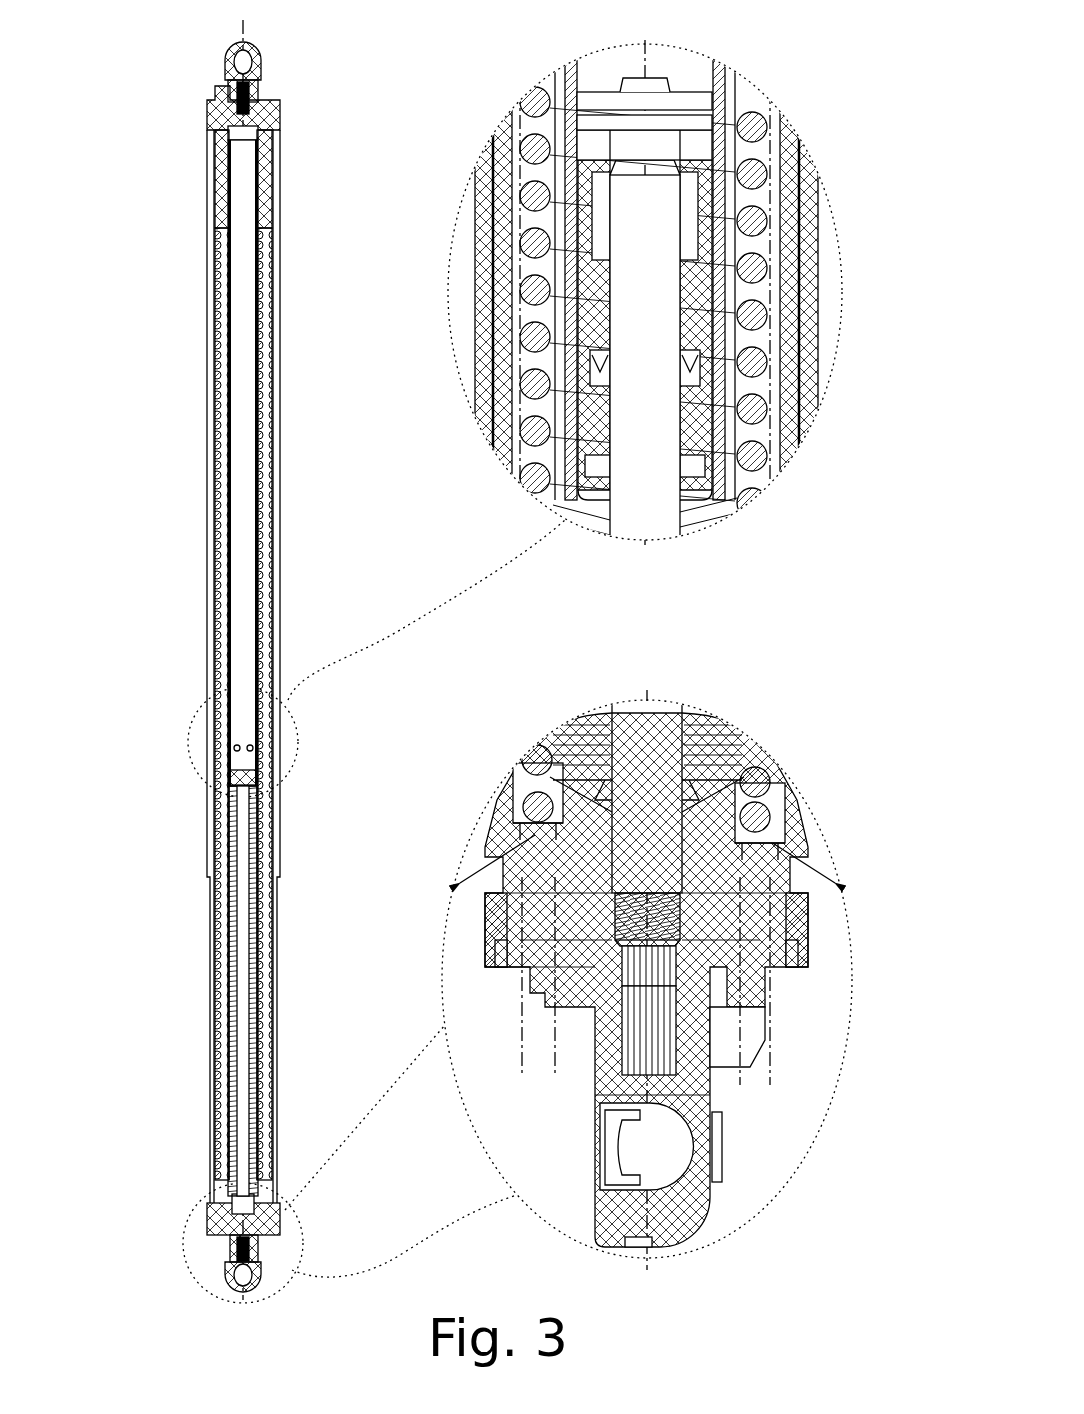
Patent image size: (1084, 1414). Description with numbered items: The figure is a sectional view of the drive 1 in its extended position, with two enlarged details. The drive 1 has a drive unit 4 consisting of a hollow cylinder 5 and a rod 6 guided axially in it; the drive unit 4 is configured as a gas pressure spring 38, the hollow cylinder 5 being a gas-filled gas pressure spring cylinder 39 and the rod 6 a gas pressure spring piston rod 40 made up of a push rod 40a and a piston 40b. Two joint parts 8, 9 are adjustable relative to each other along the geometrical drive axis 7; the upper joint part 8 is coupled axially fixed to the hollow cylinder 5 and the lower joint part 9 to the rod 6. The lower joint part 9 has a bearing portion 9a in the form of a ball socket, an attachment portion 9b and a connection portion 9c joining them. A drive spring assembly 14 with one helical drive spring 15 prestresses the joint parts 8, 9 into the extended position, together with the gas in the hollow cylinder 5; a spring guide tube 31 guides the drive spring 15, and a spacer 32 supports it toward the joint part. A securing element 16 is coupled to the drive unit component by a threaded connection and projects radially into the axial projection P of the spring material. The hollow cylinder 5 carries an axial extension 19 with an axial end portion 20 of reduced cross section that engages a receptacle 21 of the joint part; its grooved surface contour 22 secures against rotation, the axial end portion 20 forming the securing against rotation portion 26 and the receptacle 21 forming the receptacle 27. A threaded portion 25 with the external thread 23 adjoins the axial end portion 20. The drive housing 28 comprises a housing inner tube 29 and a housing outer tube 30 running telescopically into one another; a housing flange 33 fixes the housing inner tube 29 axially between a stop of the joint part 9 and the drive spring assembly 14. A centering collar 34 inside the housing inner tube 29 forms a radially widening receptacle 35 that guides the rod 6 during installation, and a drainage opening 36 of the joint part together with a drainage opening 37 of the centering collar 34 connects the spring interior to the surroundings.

The drive 1 is at (185, 405).
The drive unit 4 is at (400, 473).
The hollow cylinder 5 is at (400, 422).
The rod 6 is at (503, 678).
The geometrical drive axis 7 is at (243, 46).
The joint part 8 is at (228, 70).
The joint part 9 is at (240, 1283).
The bearing portion 9a is at (720, 1247).
The attachment portion 9b is at (868, 870).
The connection portion 9c is at (745, 1007).
The drive spring assembly 14 is at (502, 632).
The drive spring 15 is at (212, 422).
The securing element 16 is at (215, 112).
The axial extension 19 is at (757, 940).
The axial end portion 20 is at (504, 985).
The receptacle 21 is at (504, 1104).
The surface contour 22 is at (600, 1016).
The external thread 23 is at (604, 915).
The threaded portion 25 is at (600, 946).
The securing against rotation portion 26 is at (600, 976).
The receptacle 27 is at (620, 1060).
The drive housing 28 is at (172, 866).
The housing inner tube 29 is at (212, 898).
The housing outer tube 30 is at (213, 824).
The spring guide tube 31 is at (738, 82).
The spacer 32 is at (218, 166).
The housing flange 33 is at (526, 812).
The centering collar 34 is at (588, 776).
The receptacle 35 is at (690, 798).
The drainage opening 36 is at (478, 868).
The drainage opening 37 is at (528, 798).
The gas pressure spring 38 is at (262, 748).
The gas pressure spring cylinder 39 is at (215, 512).
The gas pressure spring piston rod 40 is at (228, 1054).
The push rod 40a is at (632, 224).
The piston 40b is at (596, 143).
The axial projection P is at (535, 1082).